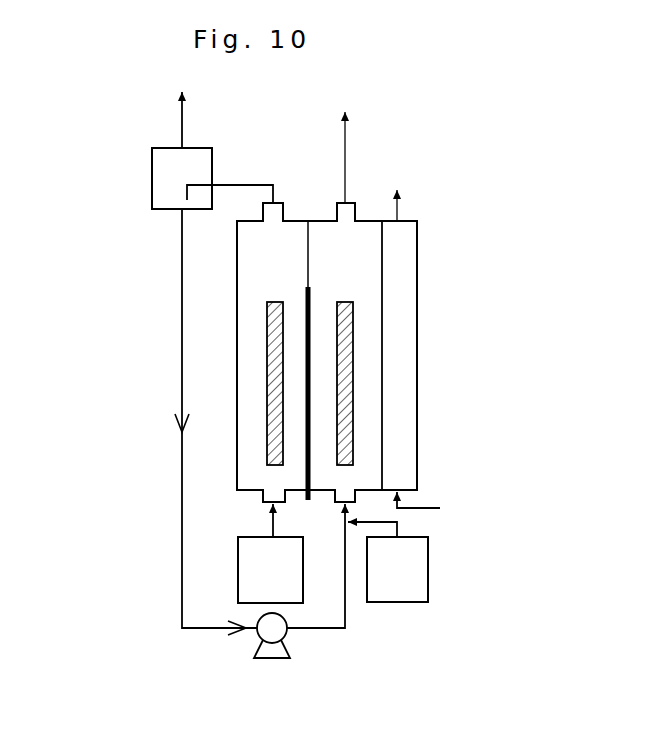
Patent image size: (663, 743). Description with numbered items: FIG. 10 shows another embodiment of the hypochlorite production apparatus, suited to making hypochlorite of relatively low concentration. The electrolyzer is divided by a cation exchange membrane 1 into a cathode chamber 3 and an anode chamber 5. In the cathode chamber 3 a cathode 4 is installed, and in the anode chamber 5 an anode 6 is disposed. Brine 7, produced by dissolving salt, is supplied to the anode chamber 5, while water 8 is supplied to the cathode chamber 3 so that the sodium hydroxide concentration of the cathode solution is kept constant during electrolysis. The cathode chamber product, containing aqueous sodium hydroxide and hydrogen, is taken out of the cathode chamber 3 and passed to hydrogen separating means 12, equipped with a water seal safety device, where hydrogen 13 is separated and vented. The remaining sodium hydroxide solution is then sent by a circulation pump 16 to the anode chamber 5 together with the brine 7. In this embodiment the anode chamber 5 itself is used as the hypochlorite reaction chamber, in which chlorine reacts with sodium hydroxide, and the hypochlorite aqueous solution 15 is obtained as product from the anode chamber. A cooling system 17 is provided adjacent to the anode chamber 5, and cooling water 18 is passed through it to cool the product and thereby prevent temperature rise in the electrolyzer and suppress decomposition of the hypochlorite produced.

The cation exchange membrane 1 is at (300, 302).
The cathode chamber 3 is at (250, 408).
The cathode 4 is at (267, 465).
The anode chamber 5 is at (368, 415).
The anode 6 is at (352, 302).
The brine 7 is at (388, 562).
The water 8 is at (270, 553).
The hydrogen separating means 12 is at (168, 191).
The hydrogen 13 is at (192, 128).
The hypochlorite aqueous solution 15 is at (347, 143).
The circulation pump 16 is at (270, 652).
The cooling system 17 is at (400, 338).
The cooling water 18 is at (435, 506).